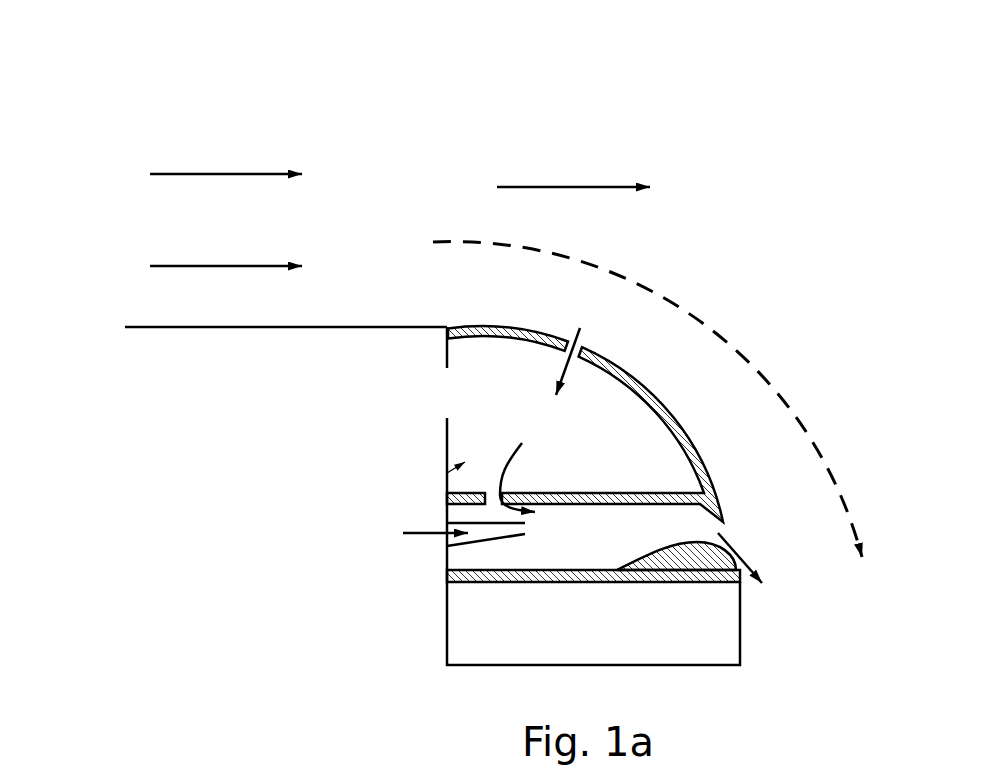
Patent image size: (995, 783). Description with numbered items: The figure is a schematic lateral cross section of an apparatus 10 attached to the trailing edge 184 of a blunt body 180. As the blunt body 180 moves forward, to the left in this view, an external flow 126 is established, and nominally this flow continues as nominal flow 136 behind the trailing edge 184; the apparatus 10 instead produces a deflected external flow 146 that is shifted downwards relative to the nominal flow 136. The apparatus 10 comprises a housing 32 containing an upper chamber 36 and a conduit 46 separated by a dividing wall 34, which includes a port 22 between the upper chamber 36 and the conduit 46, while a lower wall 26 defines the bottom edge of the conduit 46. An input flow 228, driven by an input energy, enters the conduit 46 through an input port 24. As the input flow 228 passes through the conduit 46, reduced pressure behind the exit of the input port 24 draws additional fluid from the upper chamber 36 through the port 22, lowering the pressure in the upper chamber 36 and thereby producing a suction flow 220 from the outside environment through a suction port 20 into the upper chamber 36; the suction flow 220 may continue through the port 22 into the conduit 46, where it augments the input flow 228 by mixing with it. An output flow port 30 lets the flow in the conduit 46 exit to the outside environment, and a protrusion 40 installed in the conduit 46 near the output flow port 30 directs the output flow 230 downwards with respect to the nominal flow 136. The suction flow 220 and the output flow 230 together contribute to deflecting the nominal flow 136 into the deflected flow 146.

The apparatus 10 is at (278, 88).
The suction port 20 is at (585, 345).
The port 22 is at (488, 483).
The input port 24 is at (447, 523).
The lower wall 26 is at (508, 583).
The output flow port 30 is at (720, 527).
The housing 32 is at (647, 400).
The dividing wall 34 is at (447, 497).
The upper chamber 36 is at (447, 473).
The protrusion 40 is at (690, 558).
The conduit 46 is at (562, 543).
The external flow 126 is at (172, 174).
The nominal flow 136 is at (553, 187).
The deflected external flow 146 is at (697, 318).
The blunt body 180 is at (265, 537).
The trailing edge 184 is at (447, 432).
The suction flow 220 is at (582, 345).
The input flow 228 is at (413, 535).
The output flow 230 is at (762, 574).